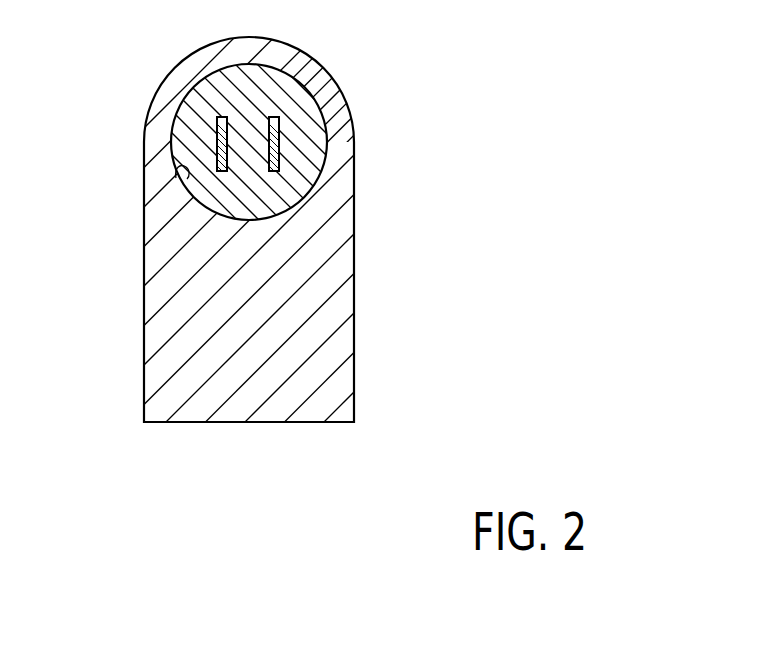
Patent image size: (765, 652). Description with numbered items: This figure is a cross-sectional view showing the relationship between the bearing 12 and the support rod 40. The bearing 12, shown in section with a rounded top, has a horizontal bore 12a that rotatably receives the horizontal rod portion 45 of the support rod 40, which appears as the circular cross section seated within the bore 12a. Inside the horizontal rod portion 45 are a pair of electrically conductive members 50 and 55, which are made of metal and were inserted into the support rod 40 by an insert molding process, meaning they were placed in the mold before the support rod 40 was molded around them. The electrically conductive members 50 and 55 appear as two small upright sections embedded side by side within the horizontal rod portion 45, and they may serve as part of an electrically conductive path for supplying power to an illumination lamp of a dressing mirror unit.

The bearing 12 is at (360, 218).
The horizontal bore 12a is at (176, 178).
The support rod 40 is at (264, 115).
The horizontal rod portion 45 is at (314, 60).
The electrically conductive member 50 is at (278, 131).
The electrically conductive member 55 is at (218, 139).